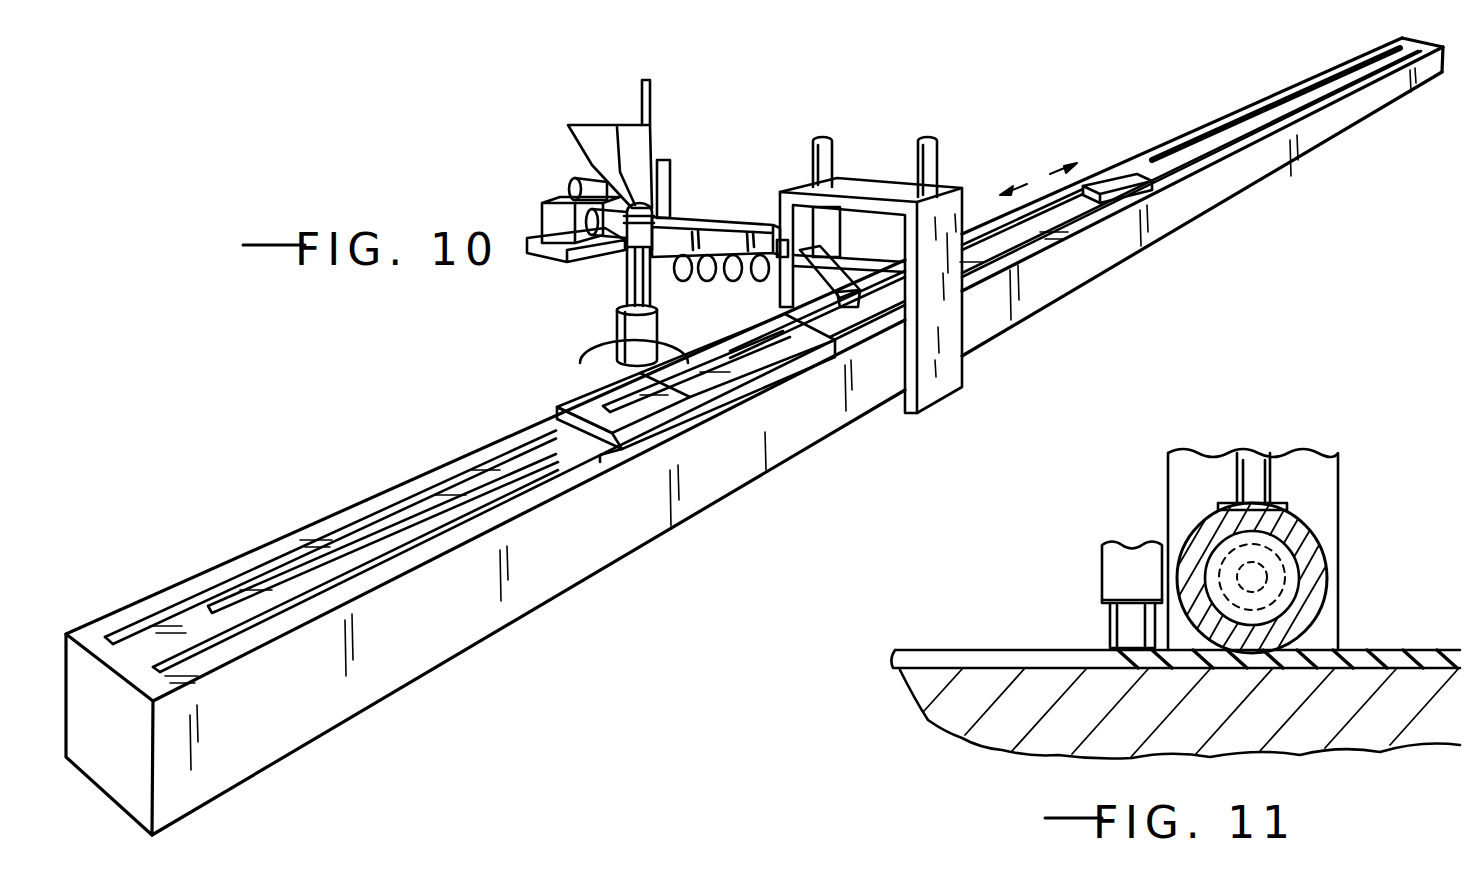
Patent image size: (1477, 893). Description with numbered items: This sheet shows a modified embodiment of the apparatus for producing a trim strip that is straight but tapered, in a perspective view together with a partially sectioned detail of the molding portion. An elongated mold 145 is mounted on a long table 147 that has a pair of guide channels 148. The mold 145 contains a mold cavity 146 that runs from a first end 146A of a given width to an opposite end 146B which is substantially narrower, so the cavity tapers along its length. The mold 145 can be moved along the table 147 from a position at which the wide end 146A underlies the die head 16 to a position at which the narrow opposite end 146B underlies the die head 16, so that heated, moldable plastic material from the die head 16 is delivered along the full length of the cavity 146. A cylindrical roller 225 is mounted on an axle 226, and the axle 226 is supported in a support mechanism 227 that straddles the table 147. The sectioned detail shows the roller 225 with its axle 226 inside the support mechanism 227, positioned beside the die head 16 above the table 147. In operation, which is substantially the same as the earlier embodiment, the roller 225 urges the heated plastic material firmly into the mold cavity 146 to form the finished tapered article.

In FIG. 11, the die head 16 is at (1123, 627).
In FIG. 10, the elongated mold 145 is at (588, 405).
In FIG. 10, the mold cavity 146 is at (697, 378).
In FIG. 10, the first end 146A is at (1103, 176).
In FIG. 10, the opposite end 146B is at (598, 432).
In FIG. 10, the table 147 is at (450, 640).
In FIG. 10, the guide channels 148 is at (158, 607).
In FIG. 11, the cylindrical roller 225 is at (1307, 530).
In FIG. 11, the axle 226 is at (1225, 555).
In FIG. 10, the support mechanism 227 is at (947, 191).